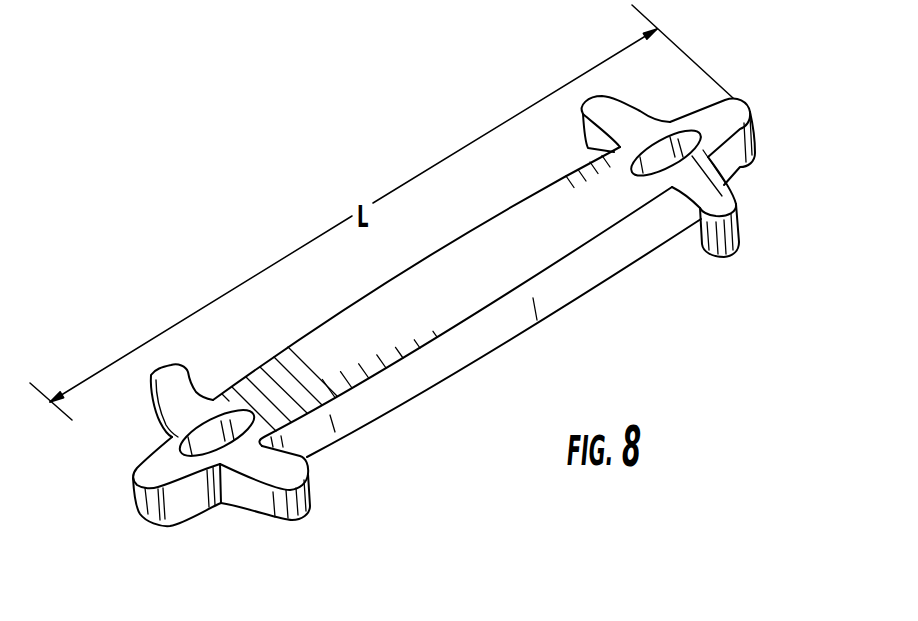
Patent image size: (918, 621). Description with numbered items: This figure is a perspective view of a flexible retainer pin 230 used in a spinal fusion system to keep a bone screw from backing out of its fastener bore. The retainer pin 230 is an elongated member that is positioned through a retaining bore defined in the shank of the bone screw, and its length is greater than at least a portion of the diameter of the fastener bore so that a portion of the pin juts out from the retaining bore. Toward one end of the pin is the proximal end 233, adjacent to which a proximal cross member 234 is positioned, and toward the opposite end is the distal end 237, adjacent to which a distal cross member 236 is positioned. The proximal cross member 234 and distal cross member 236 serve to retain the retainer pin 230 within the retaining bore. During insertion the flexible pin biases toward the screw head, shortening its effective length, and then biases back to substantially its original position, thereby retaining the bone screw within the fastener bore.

The flexible retainer pin 230 is at (473, 368).
The proximal end 233 is at (142, 505).
The proximal cross member 234 is at (300, 513).
The distal cross member 236 is at (737, 249).
The distal end 237 is at (750, 133).